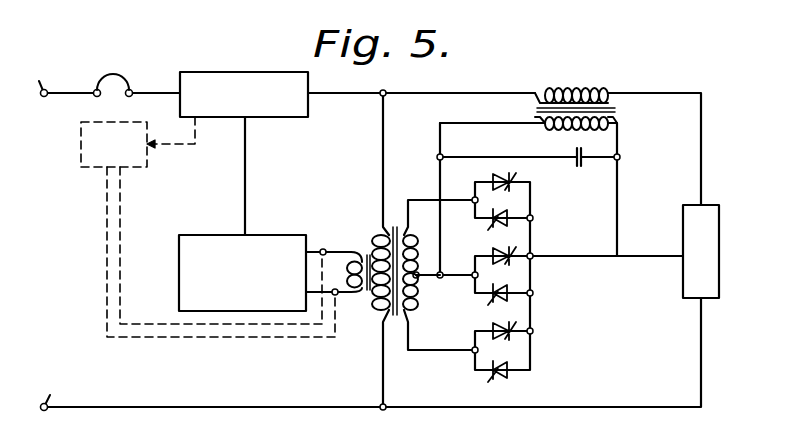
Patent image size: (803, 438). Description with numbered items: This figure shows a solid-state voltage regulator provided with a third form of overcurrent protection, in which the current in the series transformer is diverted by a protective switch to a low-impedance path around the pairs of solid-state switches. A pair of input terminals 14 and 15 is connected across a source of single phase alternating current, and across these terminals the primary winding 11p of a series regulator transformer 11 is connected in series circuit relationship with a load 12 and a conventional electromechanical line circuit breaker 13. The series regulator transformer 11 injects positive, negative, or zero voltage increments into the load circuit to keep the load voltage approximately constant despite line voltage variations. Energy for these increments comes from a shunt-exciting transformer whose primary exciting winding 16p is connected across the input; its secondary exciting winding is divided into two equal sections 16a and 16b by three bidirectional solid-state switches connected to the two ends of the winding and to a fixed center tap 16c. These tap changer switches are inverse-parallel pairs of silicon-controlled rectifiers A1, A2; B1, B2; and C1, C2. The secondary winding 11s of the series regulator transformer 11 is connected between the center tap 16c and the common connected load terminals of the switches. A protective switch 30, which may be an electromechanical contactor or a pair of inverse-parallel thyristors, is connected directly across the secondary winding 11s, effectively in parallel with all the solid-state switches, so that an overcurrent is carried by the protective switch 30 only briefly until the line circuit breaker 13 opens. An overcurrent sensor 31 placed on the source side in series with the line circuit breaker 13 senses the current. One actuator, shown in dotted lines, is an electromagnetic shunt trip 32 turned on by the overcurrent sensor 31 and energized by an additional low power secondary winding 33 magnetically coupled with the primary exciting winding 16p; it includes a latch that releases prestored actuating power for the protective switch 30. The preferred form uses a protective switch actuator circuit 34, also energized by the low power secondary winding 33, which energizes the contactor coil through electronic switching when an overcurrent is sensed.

The input terminal 14 is at (42, 81).
The line circuit breaker 13 is at (99, 80).
The input terminal 15 is at (56, 391).
The overcurrent sensor 31 is at (296, 113).
The shunt trip 32 is at (81, 148).
The protective switch actuator circuit 34 is at (290, 235).
The low power secondary winding 33 is at (338, 285).
The primary exciting winding 16p is at (378, 248).
The secondary exciting winding section 16a is at (413, 237).
The secondary exciting winding section 16b is at (415, 302).
The center tap 16c is at (418, 278).
The primary winding 11p is at (580, 92).
The secondary winding 11s is at (556, 130).
The series regulator transformer 11 is at (620, 110).
The protective switch 30 is at (583, 163).
The silicon-controlled rectifier A1 is at (497, 176).
The silicon-controlled rectifier A2 is at (510, 216).
The silicon-controlled rectifier B1 is at (490, 255).
The silicon-controlled rectifier B2 is at (508, 293).
The silicon-controlled rectifier C1 is at (494, 330).
The silicon-controlled rectifier C2 is at (508, 372).
The load 12 is at (719, 220).